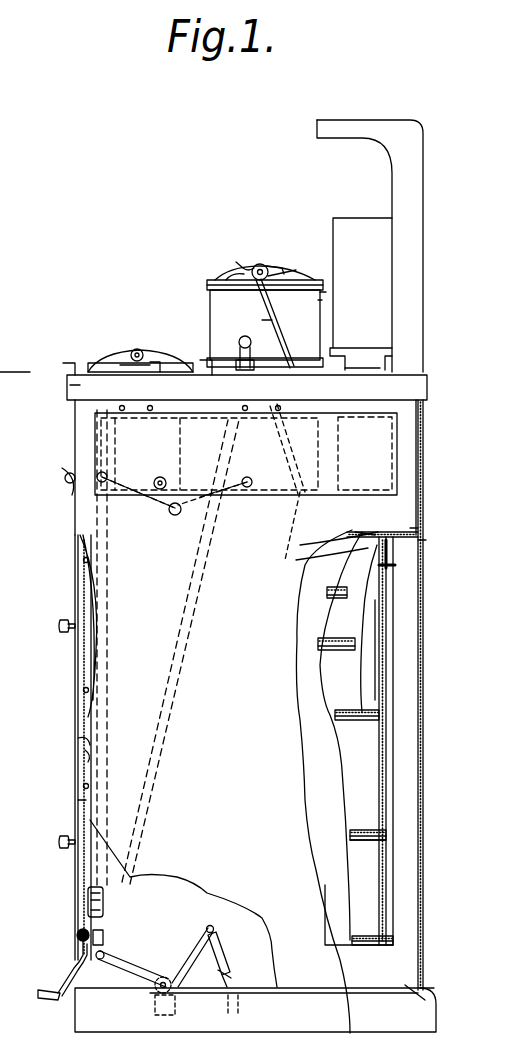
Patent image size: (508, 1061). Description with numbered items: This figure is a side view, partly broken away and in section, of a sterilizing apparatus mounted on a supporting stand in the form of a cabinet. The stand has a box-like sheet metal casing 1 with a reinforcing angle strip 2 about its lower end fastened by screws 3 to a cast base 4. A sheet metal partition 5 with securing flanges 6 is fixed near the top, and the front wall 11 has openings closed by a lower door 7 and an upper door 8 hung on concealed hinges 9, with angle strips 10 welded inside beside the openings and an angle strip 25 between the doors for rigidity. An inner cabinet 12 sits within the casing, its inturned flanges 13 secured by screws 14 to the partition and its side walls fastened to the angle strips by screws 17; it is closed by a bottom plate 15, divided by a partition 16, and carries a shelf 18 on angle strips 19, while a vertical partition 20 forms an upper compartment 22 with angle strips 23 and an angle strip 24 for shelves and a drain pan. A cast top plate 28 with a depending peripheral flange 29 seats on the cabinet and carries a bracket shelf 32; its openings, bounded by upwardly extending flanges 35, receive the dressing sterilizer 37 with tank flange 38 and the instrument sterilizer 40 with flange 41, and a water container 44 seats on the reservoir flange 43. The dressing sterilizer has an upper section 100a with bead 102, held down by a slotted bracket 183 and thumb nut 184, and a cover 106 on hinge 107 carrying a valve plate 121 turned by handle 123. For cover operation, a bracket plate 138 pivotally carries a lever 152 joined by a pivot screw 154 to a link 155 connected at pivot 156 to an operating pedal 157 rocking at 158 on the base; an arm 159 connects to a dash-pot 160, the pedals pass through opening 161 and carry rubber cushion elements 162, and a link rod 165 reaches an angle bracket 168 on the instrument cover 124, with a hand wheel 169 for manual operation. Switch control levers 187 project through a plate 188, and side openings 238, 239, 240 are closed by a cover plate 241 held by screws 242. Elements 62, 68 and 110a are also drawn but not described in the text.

The sheet metal casing 1 is at (66, 923).
The reinforcing angle strip 2 is at (415, 986).
The screws 3 is at (412, 990).
The cast base 4 is at (430, 1000).
The sheet metal partition 5 is at (420, 545).
The securing flanges 6 is at (415, 530).
The lower door 7 is at (76, 803).
The upper door 8 is at (77, 578).
The concealed hinges 9 is at (88, 898).
The angle strips 10 is at (92, 640).
The front wall 11 is at (80, 755).
The inner cabinet 12 is at (385, 748).
The inturned flanges 13 is at (398, 554).
The screws 14 is at (376, 532).
The bottom plate 15 is at (368, 936).
The partition 16 is at (90, 724).
The screws 17 is at (83, 560).
The shelf 18 is at (370, 830).
The angle strips 19 is at (374, 841).
The vertical partition 20 is at (340, 566).
The compartment 22 is at (387, 645).
The angle strips 23 is at (386, 572).
The angle strip 24 is at (350, 714).
The angle strip 25 is at (78, 738).
The cast top plate 28 is at (74, 378).
The depending peripheral flange 29 is at (10, 366).
The bracket shelf 32 is at (392, 176).
The upwardly extending flanges 35 is at (70, 364).
The dressing sterilizer 37 is at (208, 296).
The peripheral flange 38 is at (249, 383).
The instrument sterilizer 40 is at (152, 351).
The flange 41 is at (160, 368).
The flange 43 is at (350, 366).
The water container 44 is at (335, 224).
The element 62 is at (6, 163).
The rod 68 is at (368, 548).
The upper section 100a is at (208, 318).
The inwardly extending bead 102 is at (324, 292).
The cover 106 is at (240, 280).
The hinge 107 is at (322, 300).
The cover 110a is at (19, 257).
The valve plate 121 is at (272, 280).
The operating handle 123 is at (262, 264).
The cover 124 is at (118, 363).
The bracket plate 138 is at (75, 470).
The lever 152 is at (165, 508).
The pivot screw 154 is at (100, 498).
The link 155 is at (108, 680).
The pivot 156 is at (80, 955).
The operating pedal 157 is at (135, 970).
The pedal pivot 158 is at (170, 990).
The arm 159 is at (200, 938).
The dash-pot 160 is at (222, 960).
The opening 161 is at (60, 983).
The rubber cushion elements 162 is at (46, 1000).
The link rod 165 is at (262, 320).
The angle bracket 168 is at (242, 265).
The hand wheel 169 is at (290, 285).
The slotted bracket 183 is at (244, 336).
The thumb nut 184 is at (240, 362).
The control lever 187 is at (70, 490).
The plate 188 is at (65, 478).
The opening 238 is at (100, 470).
The opening 239 is at (176, 515).
The opening 240 is at (307, 526).
The cover plate 241 is at (362, 425).
The screws 242 is at (265, 418).